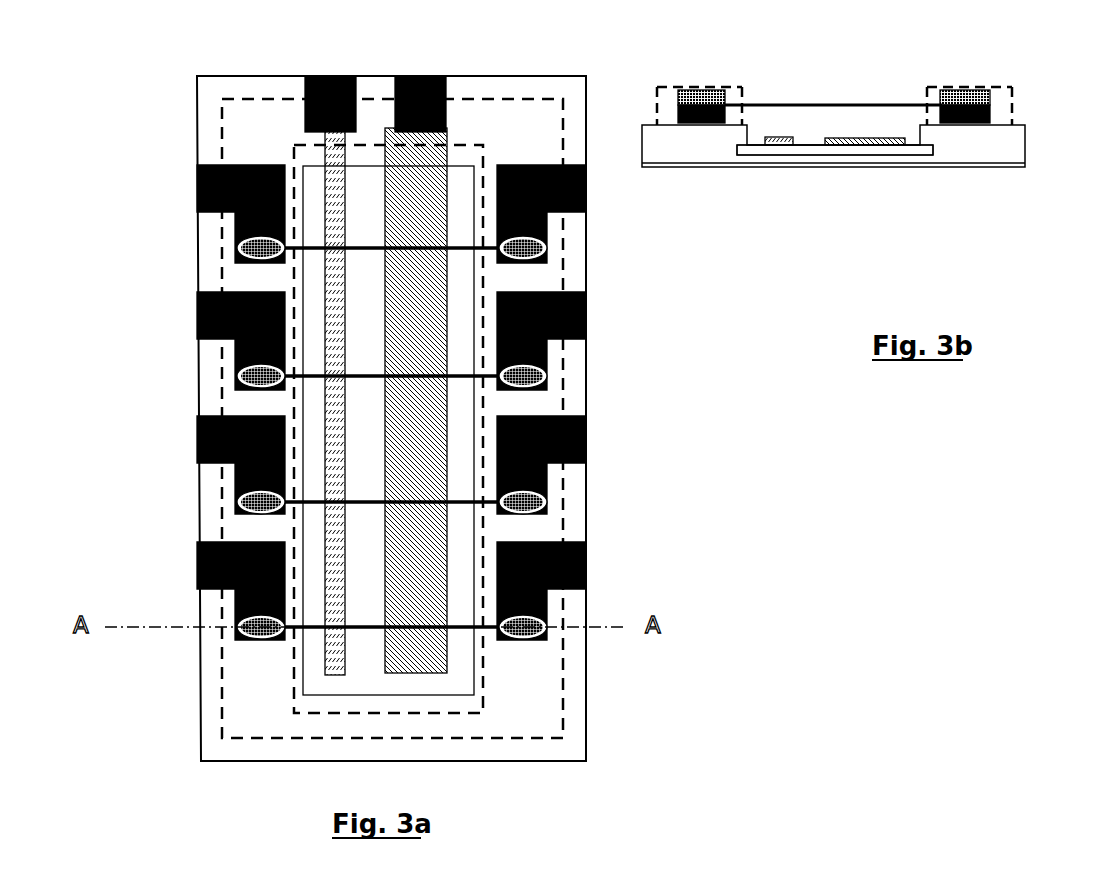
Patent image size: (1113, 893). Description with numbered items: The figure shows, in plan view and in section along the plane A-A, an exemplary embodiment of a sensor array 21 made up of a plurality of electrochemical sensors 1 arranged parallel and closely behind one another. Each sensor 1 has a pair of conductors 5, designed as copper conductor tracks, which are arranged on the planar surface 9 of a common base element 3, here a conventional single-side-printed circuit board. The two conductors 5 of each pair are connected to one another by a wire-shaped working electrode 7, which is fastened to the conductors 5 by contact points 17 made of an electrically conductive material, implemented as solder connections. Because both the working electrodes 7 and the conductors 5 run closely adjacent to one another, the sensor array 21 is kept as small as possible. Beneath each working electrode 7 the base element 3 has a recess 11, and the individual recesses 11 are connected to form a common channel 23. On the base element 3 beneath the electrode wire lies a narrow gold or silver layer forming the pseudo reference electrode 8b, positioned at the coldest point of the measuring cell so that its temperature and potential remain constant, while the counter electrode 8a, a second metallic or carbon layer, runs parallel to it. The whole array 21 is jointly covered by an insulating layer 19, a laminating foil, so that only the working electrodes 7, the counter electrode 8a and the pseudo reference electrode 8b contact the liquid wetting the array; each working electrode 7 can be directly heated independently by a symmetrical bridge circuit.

In FIG. 3A, the electrochemical sensor 1 is at (622, 453).
In FIG. 3A, the base element 3 is at (212, 697).
In FIG. 3A, the conductors 5 is at (197, 563).
In FIG. 3A, the working electrode 7 is at (375, 630).
In FIG. 3B, the working electrode 7 is at (768, 106).
In FIG. 3A, the counter electrode 8a is at (419, 423).
In FIG. 3B, the counter electrode 8a is at (883, 145).
In FIG. 3A, the pseudo reference electrode 8b is at (336, 424).
In FIG. 3B, the pseudo reference electrode 8b is at (780, 145).
In FIG. 3A, the planar surface 9 is at (522, 675).
In FIG. 3B, the recess 11 is at (812, 145).
In FIG. 3A, the contact points 17 is at (245, 495).
In FIG. 3A, the insulating layer 19 is at (258, 130).
In FIG. 3A, the sensor array 21 is at (828, 576).
In FIG. 3A, the common channel 23 is at (365, 283).
In FIG. 3B, the common channel 23 is at (835, 150).